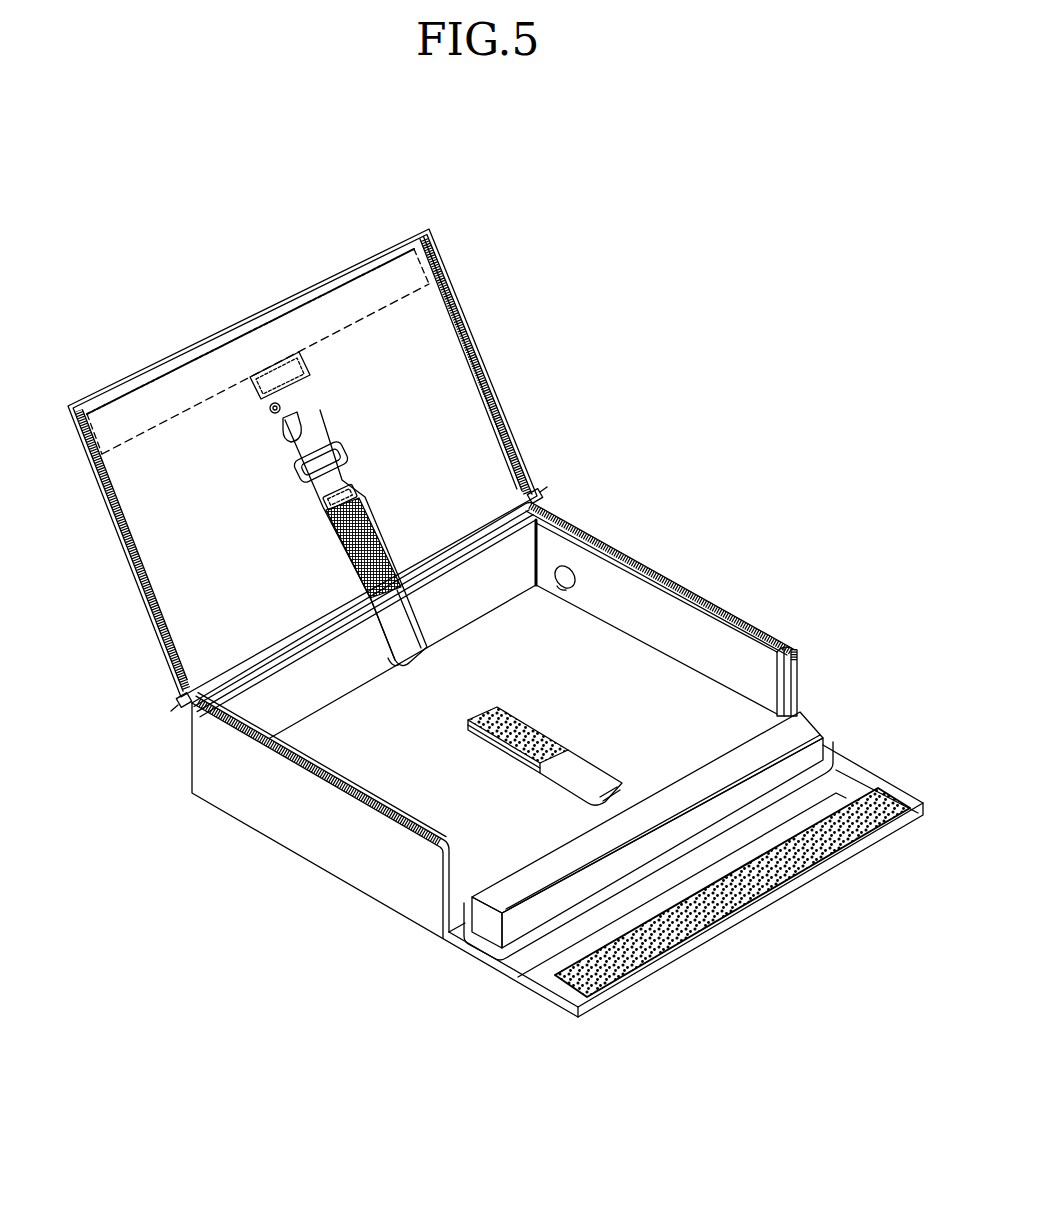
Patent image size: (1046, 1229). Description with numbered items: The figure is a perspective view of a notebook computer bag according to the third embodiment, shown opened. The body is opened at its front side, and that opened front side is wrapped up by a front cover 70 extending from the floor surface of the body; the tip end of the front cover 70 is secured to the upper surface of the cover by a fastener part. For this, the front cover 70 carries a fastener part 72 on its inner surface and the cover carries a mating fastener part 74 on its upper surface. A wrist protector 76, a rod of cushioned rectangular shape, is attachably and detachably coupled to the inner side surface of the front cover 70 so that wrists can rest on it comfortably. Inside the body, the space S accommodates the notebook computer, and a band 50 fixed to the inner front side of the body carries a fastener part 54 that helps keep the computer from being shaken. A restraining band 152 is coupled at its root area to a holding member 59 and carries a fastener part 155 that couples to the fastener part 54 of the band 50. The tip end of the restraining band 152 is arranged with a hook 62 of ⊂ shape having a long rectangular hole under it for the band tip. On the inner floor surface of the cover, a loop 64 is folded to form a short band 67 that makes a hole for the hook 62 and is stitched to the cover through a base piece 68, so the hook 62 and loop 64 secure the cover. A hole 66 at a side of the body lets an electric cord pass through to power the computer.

The band 50 is at (585, 763).
The fastener part 54 is at (520, 727).
The holding member 59 is at (390, 663).
The hook 62 is at (281, 428).
The loop 64 is at (306, 393).
The hole 66 is at (555, 572).
The short band 67 is at (270, 406).
The base piece 68 is at (293, 363).
The front cover 70 is at (842, 777).
The fastener part 72 is at (745, 885).
The fastener part 74 is at (345, 307).
The wrist protector 76 is at (801, 735).
The restraining band 152 is at (395, 607).
The fastener part 155 is at (370, 505).
The space S is at (618, 663).